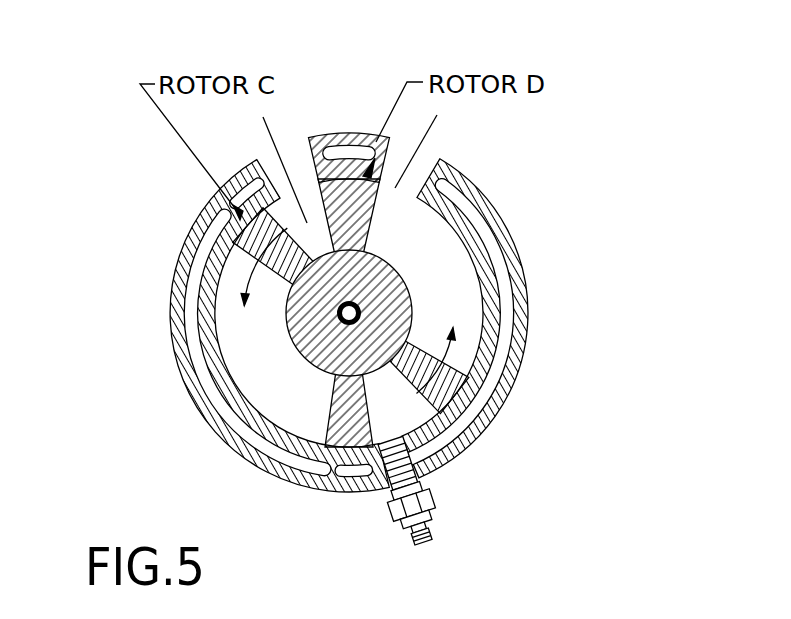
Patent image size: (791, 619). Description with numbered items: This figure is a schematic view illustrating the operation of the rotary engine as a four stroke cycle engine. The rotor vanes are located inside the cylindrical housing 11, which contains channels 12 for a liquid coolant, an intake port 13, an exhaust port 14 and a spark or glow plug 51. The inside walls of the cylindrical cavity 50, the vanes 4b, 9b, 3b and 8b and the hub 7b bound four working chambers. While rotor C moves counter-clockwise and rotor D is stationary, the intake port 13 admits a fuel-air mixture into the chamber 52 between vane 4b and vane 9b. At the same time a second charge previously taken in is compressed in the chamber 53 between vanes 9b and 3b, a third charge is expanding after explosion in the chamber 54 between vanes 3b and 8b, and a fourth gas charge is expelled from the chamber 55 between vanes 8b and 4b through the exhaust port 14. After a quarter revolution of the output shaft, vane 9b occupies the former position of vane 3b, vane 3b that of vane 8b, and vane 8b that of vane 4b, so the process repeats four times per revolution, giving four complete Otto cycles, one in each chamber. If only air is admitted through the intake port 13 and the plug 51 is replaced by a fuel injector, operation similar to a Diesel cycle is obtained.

The chamber 52 is at (292, 195).
The intake port 13 is at (263, 117).
The vane 4b is at (333, 133).
The exhaust port 14 is at (437, 115).
The chamber 55 is at (408, 235).
The vane 9b is at (232, 238).
The hub 7b is at (410, 293).
The channels 12 is at (500, 325).
The chamber 53 is at (257, 340).
The vane 8b is at (455, 400).
The cylindrical cavity 50 is at (272, 398).
The chamber 54 is at (390, 408).
The vane 3b is at (340, 460).
The cylindrical housing 11 is at (348, 467).
The spark or glow plug 51 is at (428, 535).